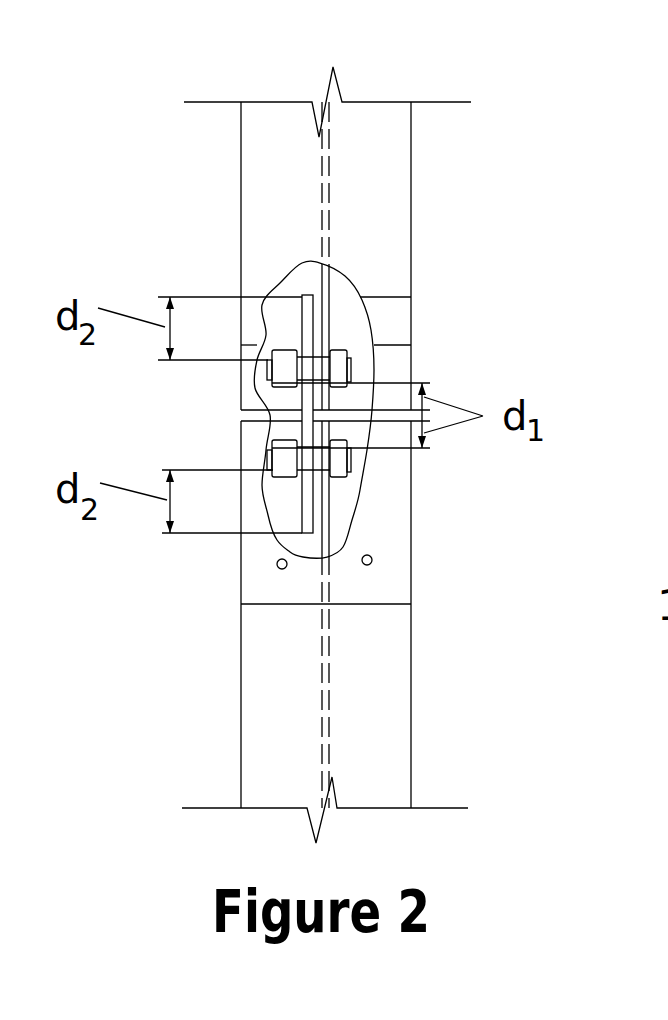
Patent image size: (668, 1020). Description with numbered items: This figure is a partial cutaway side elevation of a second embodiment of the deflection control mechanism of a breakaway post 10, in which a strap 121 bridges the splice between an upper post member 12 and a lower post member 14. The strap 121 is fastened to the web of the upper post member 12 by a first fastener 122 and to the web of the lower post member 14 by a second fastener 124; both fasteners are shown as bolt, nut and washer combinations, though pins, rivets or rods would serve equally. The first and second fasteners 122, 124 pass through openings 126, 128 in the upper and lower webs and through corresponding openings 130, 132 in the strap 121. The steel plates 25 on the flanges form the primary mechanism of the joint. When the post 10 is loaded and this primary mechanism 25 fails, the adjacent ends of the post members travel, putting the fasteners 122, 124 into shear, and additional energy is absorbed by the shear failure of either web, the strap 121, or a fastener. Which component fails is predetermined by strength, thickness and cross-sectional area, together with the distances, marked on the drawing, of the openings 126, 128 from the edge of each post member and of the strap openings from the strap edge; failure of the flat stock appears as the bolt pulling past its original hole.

The breakaway post 10 is at (583, 363).
The upper post member 12 is at (392, 180).
The lower post member 14 is at (383, 688).
The steel plates 25 is at (363, 605).
The strap 121 is at (305, 535).
The first fastener 122 is at (350, 353).
The second fastener 124 is at (352, 477).
The opening 126 is at (332, 347).
The opening 128 is at (327, 473).
The opening 130 is at (302, 352).
The opening 132 is at (308, 470).